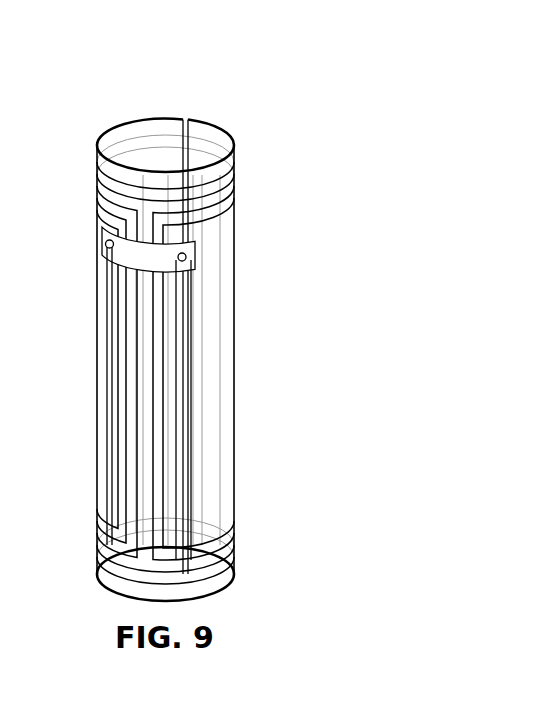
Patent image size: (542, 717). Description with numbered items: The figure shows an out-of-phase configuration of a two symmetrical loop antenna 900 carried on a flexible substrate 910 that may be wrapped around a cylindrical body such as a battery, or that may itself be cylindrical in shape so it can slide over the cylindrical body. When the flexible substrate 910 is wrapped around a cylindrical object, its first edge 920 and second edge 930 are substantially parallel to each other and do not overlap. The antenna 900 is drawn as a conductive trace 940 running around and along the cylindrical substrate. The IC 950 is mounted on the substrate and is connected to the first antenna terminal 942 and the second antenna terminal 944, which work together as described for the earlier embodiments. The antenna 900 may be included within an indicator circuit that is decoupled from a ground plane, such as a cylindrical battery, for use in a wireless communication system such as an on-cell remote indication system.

The two symmetrical loop antenna 900 is at (262, 97).
The flexible substrate 910 is at (128, 121).
The first edge 920 is at (194, 118).
The second edge 930 is at (185, 118).
The serpentine electrode trace 940 is at (226, 210).
The first antenna terminal 942 is at (186, 258).
The second antenna terminal 944 is at (105, 247).
The IC 950 is at (103, 236).